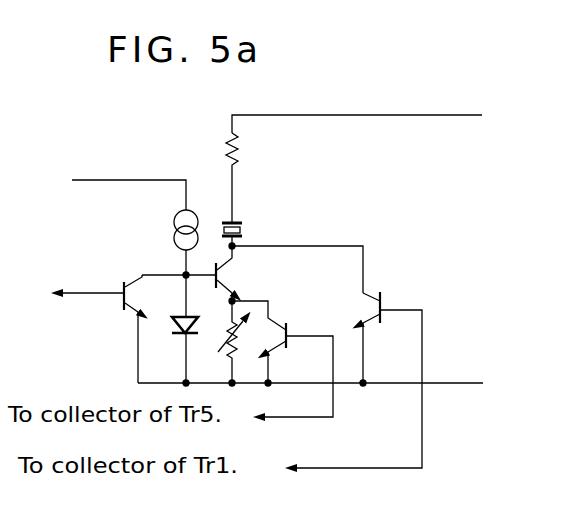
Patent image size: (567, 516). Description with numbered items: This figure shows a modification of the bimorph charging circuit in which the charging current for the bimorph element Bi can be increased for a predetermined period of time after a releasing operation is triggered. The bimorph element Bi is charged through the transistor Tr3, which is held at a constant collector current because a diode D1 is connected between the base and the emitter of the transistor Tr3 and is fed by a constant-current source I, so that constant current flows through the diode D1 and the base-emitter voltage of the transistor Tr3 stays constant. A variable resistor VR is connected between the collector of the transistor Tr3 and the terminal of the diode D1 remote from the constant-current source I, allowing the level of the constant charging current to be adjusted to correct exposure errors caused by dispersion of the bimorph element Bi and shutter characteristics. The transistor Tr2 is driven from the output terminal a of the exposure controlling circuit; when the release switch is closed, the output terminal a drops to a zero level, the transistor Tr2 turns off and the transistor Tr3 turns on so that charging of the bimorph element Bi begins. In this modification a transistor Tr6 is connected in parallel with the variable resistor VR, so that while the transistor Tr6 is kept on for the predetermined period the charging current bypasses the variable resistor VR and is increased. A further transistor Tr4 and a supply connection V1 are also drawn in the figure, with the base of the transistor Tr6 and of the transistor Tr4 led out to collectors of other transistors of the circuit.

The transistor Tr2 is at (134, 278).
The transistor Tr3 is at (227, 275).
The transistor Tr4 is at (385, 293).
The transistor Tr6 is at (288, 323).
The diode D1 is at (177, 330).
The variable resistor VR is at (222, 338).
The constant-current source I is at (168, 232).
The bimorph element Bi is at (245, 226).
The voltage source terminal V1 is at (110, 189).
The output terminal a is at (81, 293).